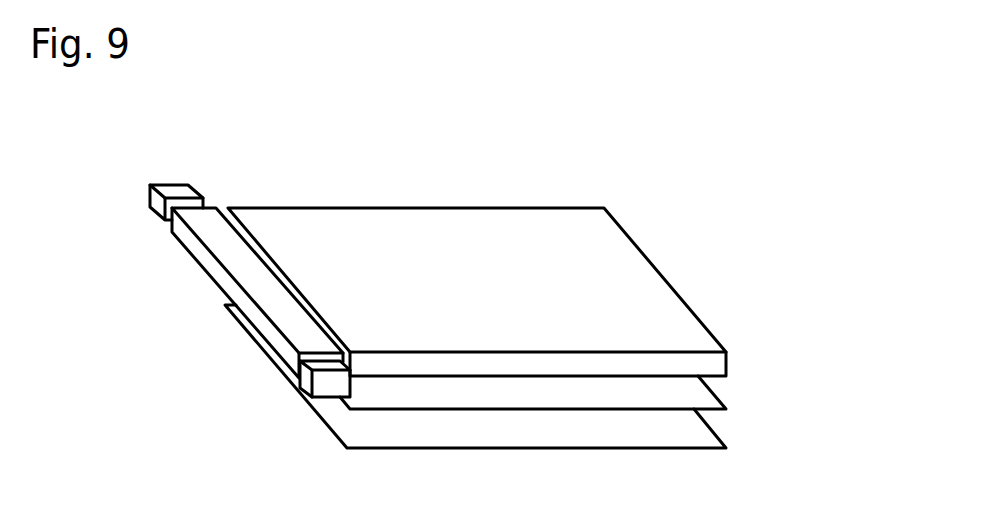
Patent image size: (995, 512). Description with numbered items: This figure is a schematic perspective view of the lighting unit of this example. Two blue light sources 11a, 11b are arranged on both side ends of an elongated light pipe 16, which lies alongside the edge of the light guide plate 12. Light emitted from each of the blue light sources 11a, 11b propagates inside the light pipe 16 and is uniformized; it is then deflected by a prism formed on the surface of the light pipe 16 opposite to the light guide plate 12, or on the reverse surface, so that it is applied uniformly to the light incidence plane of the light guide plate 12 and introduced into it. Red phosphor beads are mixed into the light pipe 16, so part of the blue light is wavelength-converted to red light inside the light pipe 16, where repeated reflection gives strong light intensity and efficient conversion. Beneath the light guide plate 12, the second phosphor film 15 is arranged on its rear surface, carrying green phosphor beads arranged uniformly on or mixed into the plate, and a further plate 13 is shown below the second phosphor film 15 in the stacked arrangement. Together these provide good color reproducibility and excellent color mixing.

The light guide plate 12 is at (607, 257).
The second phosphor film 15 is at (708, 400).
The lower plate 13 is at (702, 443).
The light pipe 16 is at (189, 250).
The blue light source 11a is at (173, 182).
The blue light source 11b is at (318, 390).